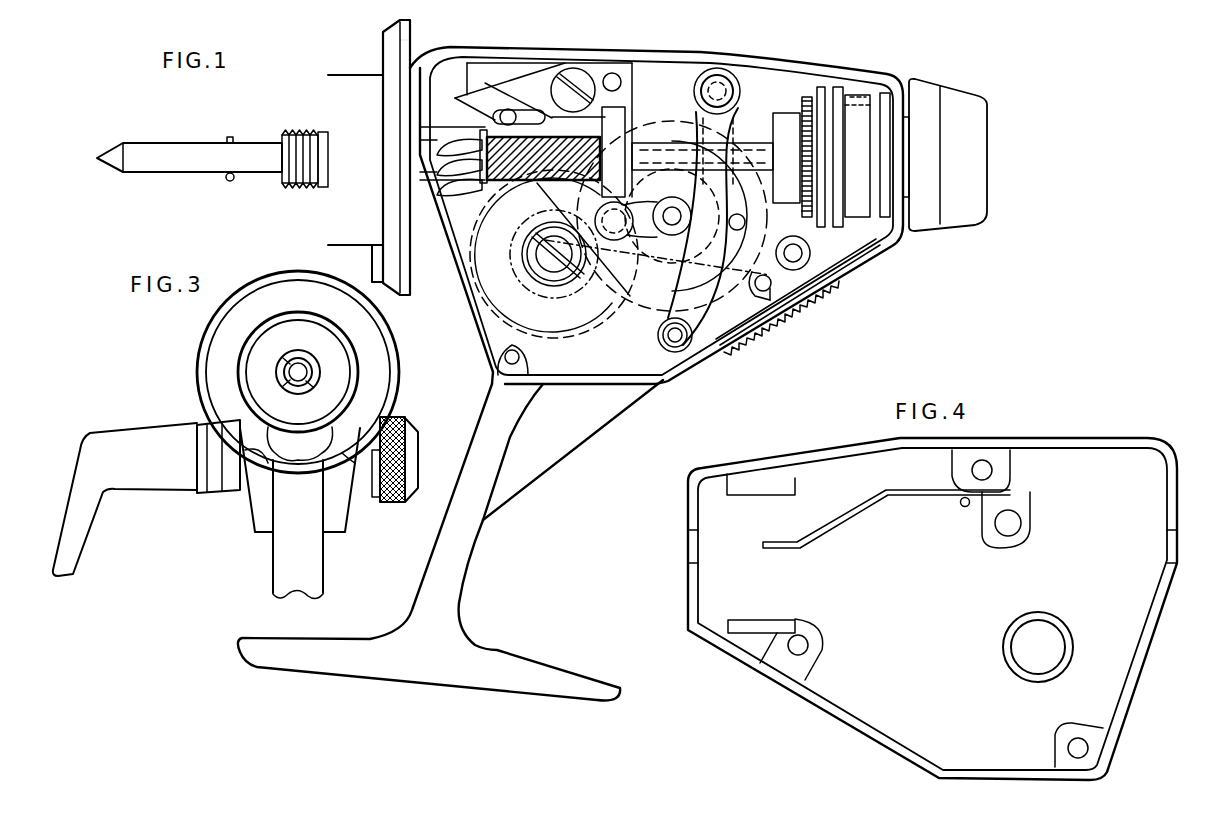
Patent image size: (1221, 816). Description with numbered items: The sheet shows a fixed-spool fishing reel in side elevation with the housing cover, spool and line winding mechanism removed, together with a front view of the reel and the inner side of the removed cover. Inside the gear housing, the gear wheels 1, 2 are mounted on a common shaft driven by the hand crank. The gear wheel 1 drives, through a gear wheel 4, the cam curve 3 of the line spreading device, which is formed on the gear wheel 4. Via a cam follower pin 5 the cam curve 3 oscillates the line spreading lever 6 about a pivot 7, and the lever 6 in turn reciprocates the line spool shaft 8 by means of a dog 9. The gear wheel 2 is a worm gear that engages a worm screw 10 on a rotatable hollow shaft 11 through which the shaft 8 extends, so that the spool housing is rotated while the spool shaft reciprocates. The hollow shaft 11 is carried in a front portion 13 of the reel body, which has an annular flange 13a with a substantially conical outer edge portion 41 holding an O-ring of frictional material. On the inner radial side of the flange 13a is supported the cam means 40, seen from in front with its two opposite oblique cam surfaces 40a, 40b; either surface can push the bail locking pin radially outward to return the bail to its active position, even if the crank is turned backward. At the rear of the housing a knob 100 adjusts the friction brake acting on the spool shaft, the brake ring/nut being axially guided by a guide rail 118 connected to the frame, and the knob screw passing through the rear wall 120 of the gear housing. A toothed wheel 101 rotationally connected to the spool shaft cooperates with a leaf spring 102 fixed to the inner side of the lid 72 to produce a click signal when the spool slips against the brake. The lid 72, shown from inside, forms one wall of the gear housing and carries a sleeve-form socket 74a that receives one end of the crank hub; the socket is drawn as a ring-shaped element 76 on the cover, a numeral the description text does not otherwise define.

In FIG. 1, the gear wheel 1 is at (547, 288).
In FIG. 1, the gear wheel 2 is at (590, 306).
In FIG. 1, the cam curve 3 is at (653, 157).
In FIG. 1, the gear wheel 4 is at (647, 288).
In FIG. 1, the cam follower pin 5 is at (745, 222).
In FIG. 1, the line spreading lever 6 is at (690, 320).
In FIG. 1, the pivot 7 is at (683, 355).
In FIG. 1, the line spool shaft 8 is at (254, 157).
In FIG. 1, the dog 9 is at (688, 153).
In FIG. 1, the worm screw 10 is at (542, 147).
In FIG. 1, the rotatable hollow shaft 11 is at (325, 145).
In FIG. 1, the front portion of the reel body 13 is at (340, 215).
In FIG. 3, the front portion of the reel body 13 is at (352, 363).
In FIG. 1, the annular flange 13a is at (410, 40).
In FIG. 1, the cam means 40 is at (375, 262).
In FIG. 3, the cam means 40 is at (298, 456).
In FIG. 3, the oblique cam surface 40a is at (352, 490).
In FIG. 3, the oblique cam surface 40b is at (262, 470).
In FIG. 1, the conical outer edge portion 41 is at (383, 40).
In FIG. 4, the lid 72 is at (1100, 500).
In FIG. 4, the sleeve-form socket 74a is at (1050, 620).
In FIG. 4, the bearing ring 76 is at (1028, 650).
In FIG. 1, the knob 100 is at (985, 150).
In FIG. 1, the toothed wheel 101 is at (800, 96).
In FIG. 4, the leaf spring 102 is at (858, 505).
In FIG. 1, the guide rail 118 is at (865, 85).
In FIG. 1, the rear wall 120 is at (898, 98).